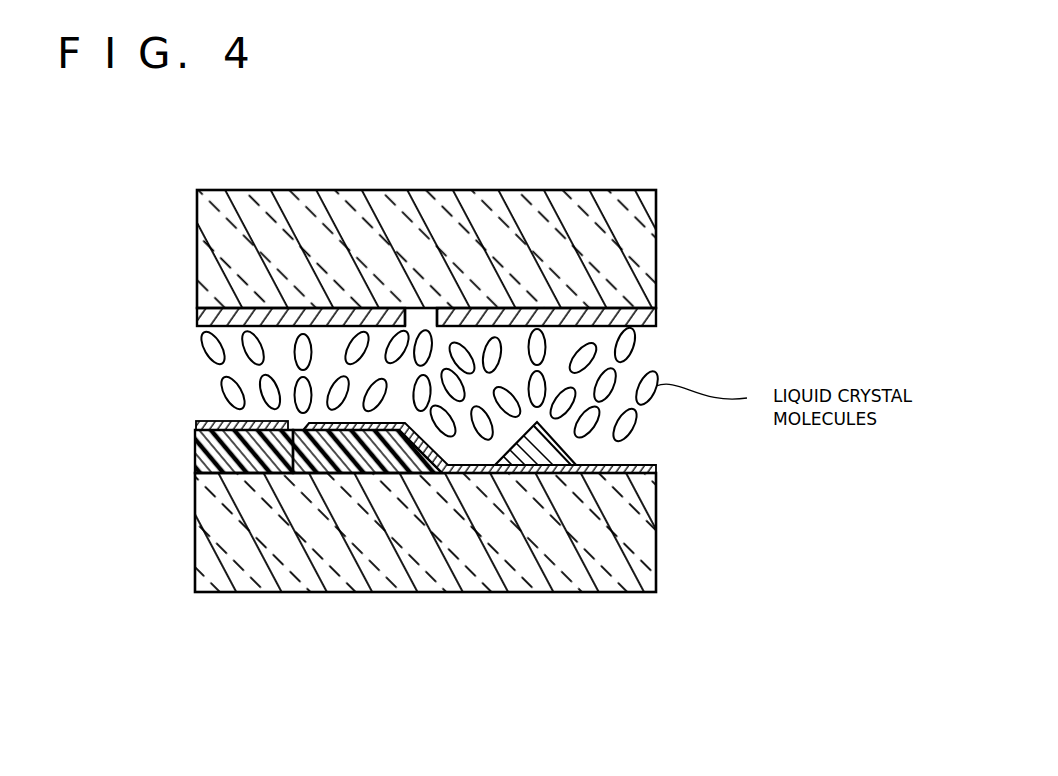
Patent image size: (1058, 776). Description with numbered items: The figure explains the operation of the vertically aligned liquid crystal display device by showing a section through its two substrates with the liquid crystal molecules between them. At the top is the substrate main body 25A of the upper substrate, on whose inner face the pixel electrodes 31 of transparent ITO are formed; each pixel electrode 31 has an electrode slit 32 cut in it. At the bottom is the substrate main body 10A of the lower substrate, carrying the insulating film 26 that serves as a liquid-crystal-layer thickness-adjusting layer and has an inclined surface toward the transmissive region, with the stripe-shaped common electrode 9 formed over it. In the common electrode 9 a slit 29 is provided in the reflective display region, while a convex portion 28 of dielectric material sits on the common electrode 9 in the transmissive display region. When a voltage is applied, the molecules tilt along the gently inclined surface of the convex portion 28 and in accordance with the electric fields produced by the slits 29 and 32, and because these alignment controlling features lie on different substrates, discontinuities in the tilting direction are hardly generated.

The substrate main body 25A is at (656, 222).
The pixel electrode 31 is at (656, 318).
The electrode slit 32 is at (421, 306).
The insulating film 26 is at (215, 468).
The slit 29 is at (297, 429).
The common electrode 9 is at (646, 461).
The convex portion 28 is at (537, 472).
The substrate main body 10A is at (655, 535).